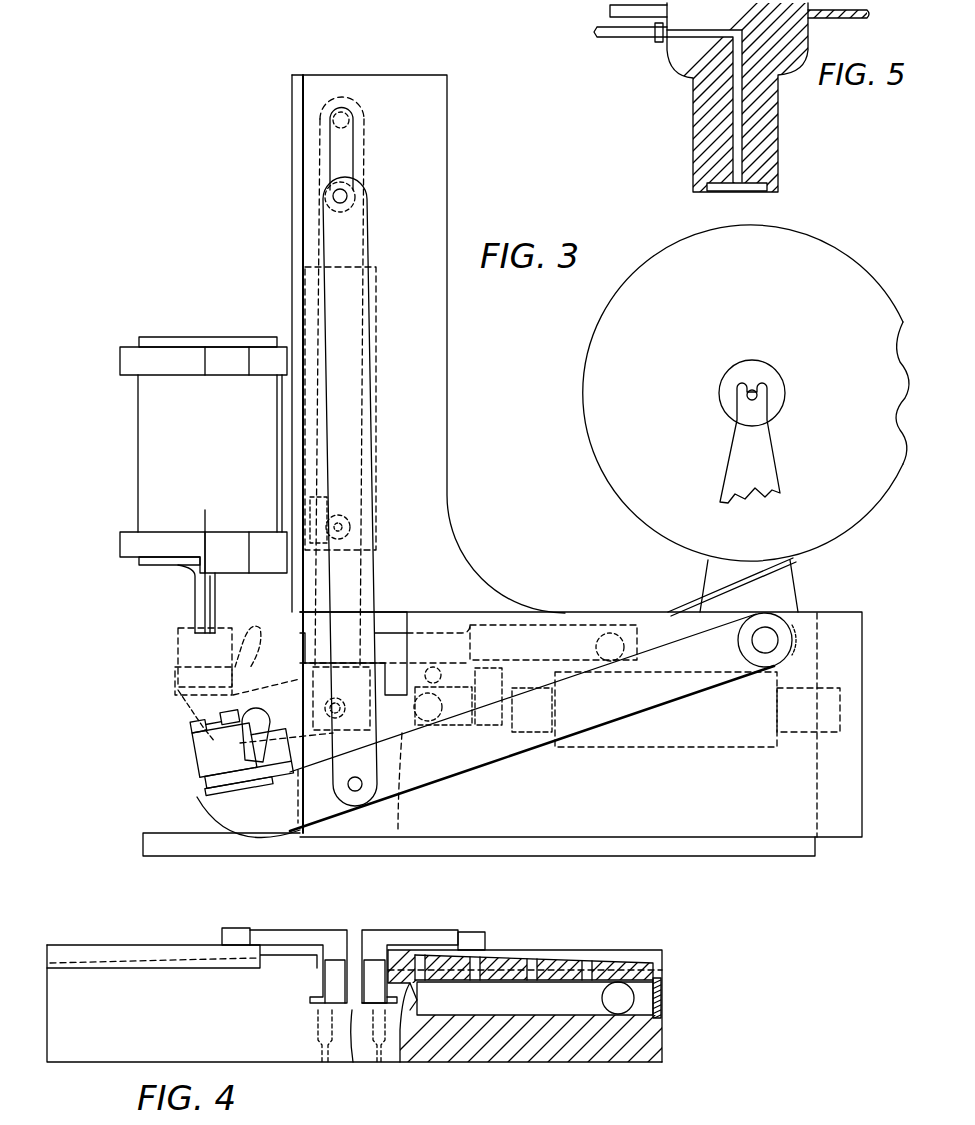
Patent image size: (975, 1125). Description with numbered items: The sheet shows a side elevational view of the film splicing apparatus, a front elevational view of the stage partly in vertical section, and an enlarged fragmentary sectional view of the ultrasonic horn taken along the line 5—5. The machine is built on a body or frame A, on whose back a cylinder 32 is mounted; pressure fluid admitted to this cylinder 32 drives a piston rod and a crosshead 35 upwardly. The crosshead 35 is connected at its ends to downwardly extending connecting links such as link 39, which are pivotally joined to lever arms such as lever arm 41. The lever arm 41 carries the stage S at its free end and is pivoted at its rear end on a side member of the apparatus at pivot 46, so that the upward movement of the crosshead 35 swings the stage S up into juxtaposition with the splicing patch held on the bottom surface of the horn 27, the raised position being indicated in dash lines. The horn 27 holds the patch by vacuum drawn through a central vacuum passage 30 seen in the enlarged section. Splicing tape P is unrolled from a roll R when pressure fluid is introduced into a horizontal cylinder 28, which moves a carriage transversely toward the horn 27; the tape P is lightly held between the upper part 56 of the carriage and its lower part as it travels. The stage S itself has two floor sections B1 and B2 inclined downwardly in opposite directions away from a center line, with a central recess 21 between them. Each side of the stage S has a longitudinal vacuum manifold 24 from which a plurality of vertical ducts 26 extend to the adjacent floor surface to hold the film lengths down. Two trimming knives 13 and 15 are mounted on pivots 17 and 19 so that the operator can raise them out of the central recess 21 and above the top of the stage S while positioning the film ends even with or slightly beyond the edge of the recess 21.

In FIG. 3, the body or frame A is at (455, 116).
In FIG. 3, the section line 5- 5 is at (197, 515).
In FIG. 4, the trimming knife 13 is at (325, 962).
In FIG. 4, the trimming knife 15 is at (377, 962).
In FIG. 4, the pivot 17 is at (233, 928).
In FIG. 3, the pivot 19 is at (262, 621).
In FIG. 4, the pivot 19 is at (468, 930).
In FIG. 4, the central recess 21 is at (352, 1064).
In FIG. 4, the longitudinal vacuum manifold 24 is at (543, 1010).
In FIG. 4, the vertical ducts 26 is at (587, 967).
In FIG. 3, the horn 27 is at (213, 606).
In FIG. 5, the horn 27 is at (770, 147).
In FIG. 3, the horizontal cylinder 28 is at (727, 738).
In FIG. 5, the central vacuum passage 30 is at (745, 112).
In FIG. 3, the cylinder 32 is at (378, 283).
In FIG. 3, the crosshead 35 is at (348, 126).
In FIG. 3, the connecting link 39 is at (323, 153).
In FIG. 3, the lever arm 41 is at (200, 726).
In FIG. 3, the pivot 46 is at (780, 627).
In FIG. 3, the upper part of carriage 56 is at (543, 622).
In FIG. 4, the floor section B1 is at (137, 960).
In FIG. 4, the floor section B2 is at (610, 967).
In FIG. 3, the splicing tape P is at (688, 602).
In FIG. 3, the roll R is at (596, 333).
In FIG. 3, the stage S is at (178, 657).
In FIG. 4, the stage S is at (195, 1027).